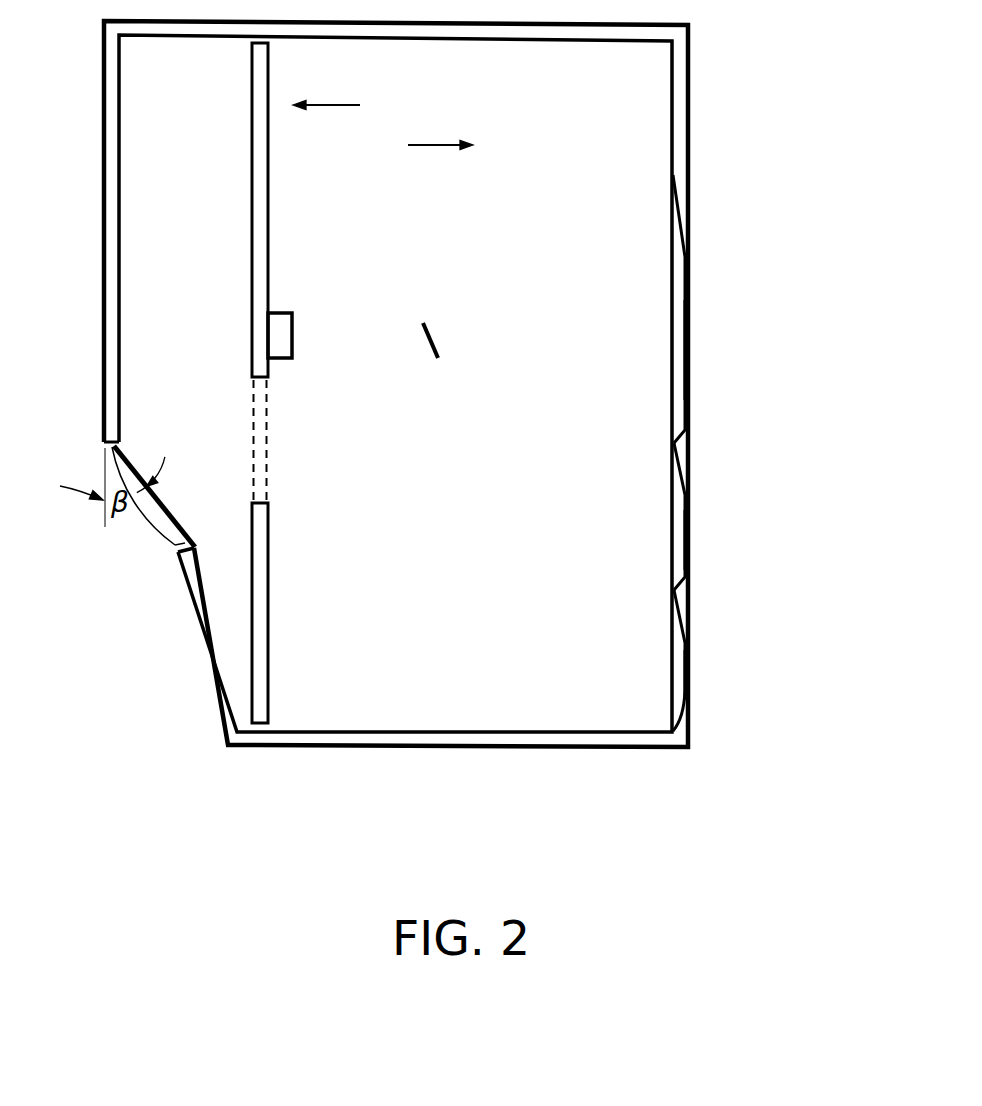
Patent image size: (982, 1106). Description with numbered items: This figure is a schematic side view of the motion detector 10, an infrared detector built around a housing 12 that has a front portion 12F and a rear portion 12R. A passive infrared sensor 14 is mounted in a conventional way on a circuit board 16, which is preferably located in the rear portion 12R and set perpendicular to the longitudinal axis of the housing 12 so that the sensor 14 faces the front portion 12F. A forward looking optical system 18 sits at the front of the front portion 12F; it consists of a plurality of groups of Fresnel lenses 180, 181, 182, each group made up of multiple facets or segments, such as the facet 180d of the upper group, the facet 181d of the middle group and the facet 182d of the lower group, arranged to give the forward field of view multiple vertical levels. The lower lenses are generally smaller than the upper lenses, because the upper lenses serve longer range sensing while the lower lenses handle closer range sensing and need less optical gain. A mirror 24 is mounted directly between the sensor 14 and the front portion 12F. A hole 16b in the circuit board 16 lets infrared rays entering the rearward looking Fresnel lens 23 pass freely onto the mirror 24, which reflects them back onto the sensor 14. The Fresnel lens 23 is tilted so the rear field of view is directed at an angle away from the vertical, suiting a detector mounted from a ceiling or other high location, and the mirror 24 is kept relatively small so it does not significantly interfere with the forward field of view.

The motion detector 10 is at (396, 439).
The housing 12 is at (518, 736).
The rear portion 12R is at (350, 105).
The front portion 12F is at (419, 143).
The passive infrared sensor 14 is at (279, 318).
The circuit board 16 is at (264, 186).
The hole 16b is at (262, 497).
The forward looking optical system 18 is at (785, 453).
The group of Fresnel lenses 180 is at (751, 309).
The facet or segment 180d is at (683, 352).
The group of Fresnel lenses 181 is at (748, 516).
The facet or segment 181d is at (677, 545).
The group of Fresnel lenses 182 is at (747, 660).
The facet or segment 182d is at (677, 688).
The Fresnel lens 23 is at (175, 540).
The mirror 24 is at (437, 345).